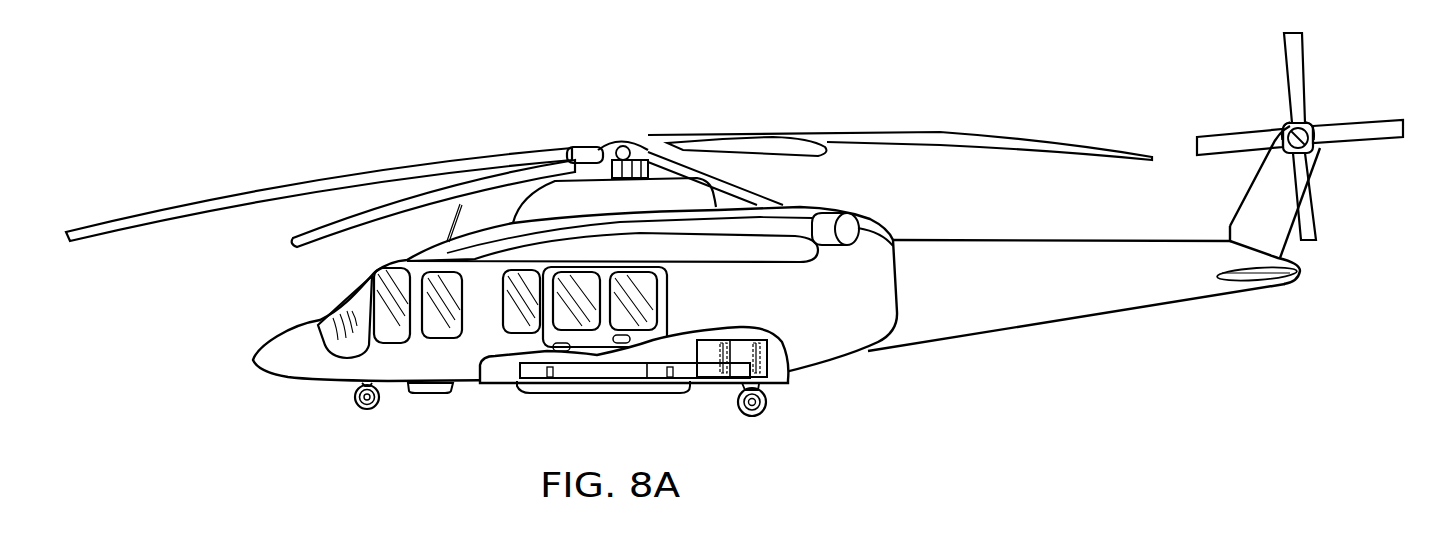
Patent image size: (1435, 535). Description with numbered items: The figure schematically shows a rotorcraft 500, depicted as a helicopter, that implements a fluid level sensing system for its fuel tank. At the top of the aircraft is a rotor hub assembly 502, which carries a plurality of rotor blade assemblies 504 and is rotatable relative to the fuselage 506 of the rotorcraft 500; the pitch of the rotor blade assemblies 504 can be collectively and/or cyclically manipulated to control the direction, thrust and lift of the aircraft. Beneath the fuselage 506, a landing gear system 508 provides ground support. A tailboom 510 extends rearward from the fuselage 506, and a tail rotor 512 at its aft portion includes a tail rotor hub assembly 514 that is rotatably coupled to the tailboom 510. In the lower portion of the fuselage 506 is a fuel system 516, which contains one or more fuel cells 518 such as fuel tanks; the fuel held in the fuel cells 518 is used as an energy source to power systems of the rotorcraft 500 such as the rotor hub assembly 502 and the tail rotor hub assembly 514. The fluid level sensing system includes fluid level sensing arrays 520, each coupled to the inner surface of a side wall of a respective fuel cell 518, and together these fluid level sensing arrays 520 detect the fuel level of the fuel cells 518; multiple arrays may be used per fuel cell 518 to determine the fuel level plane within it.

The rotorcraft 500 is at (452, 91).
The rotor hub assembly 502 is at (609, 129).
The rotor blade assemblies 504 is at (133, 216).
The fuselage 506 is at (293, 381).
The landing gear system 508 is at (367, 411).
The tailboom 510 is at (1052, 323).
The tail rotor 512 is at (1313, 56).
The tail rotor hub assembly 514 is at (1312, 118).
The fuel system 516 is at (509, 365).
The fuel cells 518 is at (592, 372).
The fluid level sensing arrays 520 is at (718, 363).